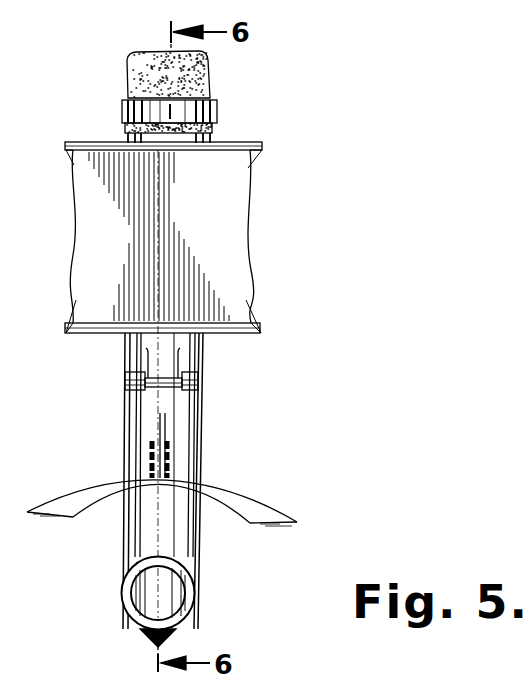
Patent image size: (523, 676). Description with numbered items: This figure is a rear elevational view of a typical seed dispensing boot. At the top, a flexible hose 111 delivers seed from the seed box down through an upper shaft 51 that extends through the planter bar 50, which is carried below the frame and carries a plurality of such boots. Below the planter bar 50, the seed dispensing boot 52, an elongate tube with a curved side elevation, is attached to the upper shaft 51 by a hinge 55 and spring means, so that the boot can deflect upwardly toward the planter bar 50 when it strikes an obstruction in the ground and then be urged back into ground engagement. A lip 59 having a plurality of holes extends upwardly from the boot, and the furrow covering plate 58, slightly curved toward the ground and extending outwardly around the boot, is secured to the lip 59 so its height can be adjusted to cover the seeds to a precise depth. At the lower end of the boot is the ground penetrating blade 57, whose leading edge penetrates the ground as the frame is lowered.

The flexible hose 111 is at (208, 72).
The planter bar 50 is at (232, 246).
The upper shaft 51 is at (200, 350).
The seed dispensing boot 52 is at (200, 470).
The hinge 55 is at (127, 380).
The ground penetrating blade 57 is at (168, 636).
The furrow covering plate 58 is at (70, 496).
The lip 59 is at (167, 427).